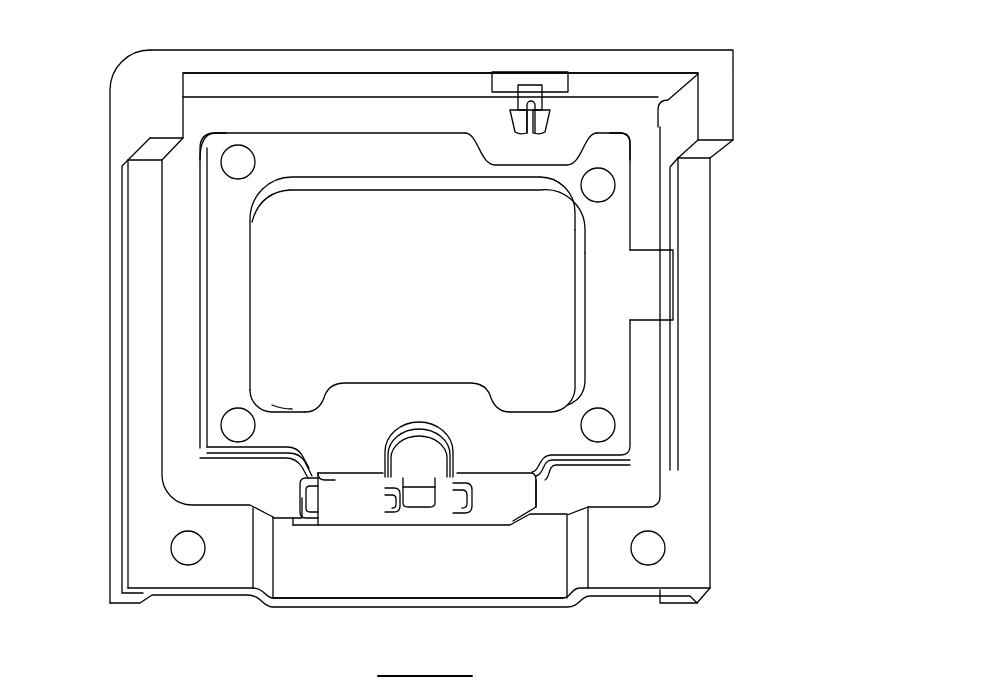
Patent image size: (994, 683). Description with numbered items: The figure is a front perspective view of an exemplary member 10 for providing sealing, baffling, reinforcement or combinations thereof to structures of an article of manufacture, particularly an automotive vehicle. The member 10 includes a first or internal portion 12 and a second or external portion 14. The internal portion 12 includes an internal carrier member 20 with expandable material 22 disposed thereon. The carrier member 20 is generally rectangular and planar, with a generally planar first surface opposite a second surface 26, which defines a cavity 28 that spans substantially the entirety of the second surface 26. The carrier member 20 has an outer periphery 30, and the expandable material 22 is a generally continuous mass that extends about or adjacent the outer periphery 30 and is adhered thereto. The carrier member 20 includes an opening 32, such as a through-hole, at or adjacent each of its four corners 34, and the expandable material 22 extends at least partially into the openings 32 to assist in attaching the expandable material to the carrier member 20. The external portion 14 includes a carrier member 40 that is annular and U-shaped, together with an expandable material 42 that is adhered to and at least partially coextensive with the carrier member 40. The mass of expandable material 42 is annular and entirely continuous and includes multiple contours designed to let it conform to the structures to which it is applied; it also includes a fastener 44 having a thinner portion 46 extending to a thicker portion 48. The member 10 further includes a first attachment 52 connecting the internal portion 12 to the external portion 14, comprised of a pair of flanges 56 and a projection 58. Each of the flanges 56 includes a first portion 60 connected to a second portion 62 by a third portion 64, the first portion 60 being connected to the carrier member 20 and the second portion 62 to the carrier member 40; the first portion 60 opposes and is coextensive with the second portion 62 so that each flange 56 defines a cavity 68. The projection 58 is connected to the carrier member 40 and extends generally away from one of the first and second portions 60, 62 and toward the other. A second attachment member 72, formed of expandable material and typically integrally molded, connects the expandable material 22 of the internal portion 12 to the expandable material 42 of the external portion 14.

The member 10 is at (790, 246).
The internal portion 12 is at (645, 369).
The external portion 14 is at (742, 401).
The carrier member 20 is at (332, 303).
The expandable material 22 is at (330, 130).
The second surface 26 is at (364, 427).
The cavity 28 is at (562, 286).
The outer periphery 30 is at (578, 236).
The opening 32 is at (224, 423).
The corners 34 is at (217, 143).
The carrier member 40 is at (523, 580).
The expandable material 42 is at (222, 62).
The fastener 44 is at (585, 108).
The thinner portion 46 is at (535, 93).
The thicker portion 48 is at (513, 125).
The first attachment 52 is at (580, 487).
The flanges 56 is at (340, 488).
The projection 58 is at (418, 492).
The first portion 60 is at (322, 476).
The second portion 62 is at (303, 512).
The third portion 64 is at (375, 490).
The cavity 68 is at (458, 495).
The second attachment member 72 is at (663, 303).